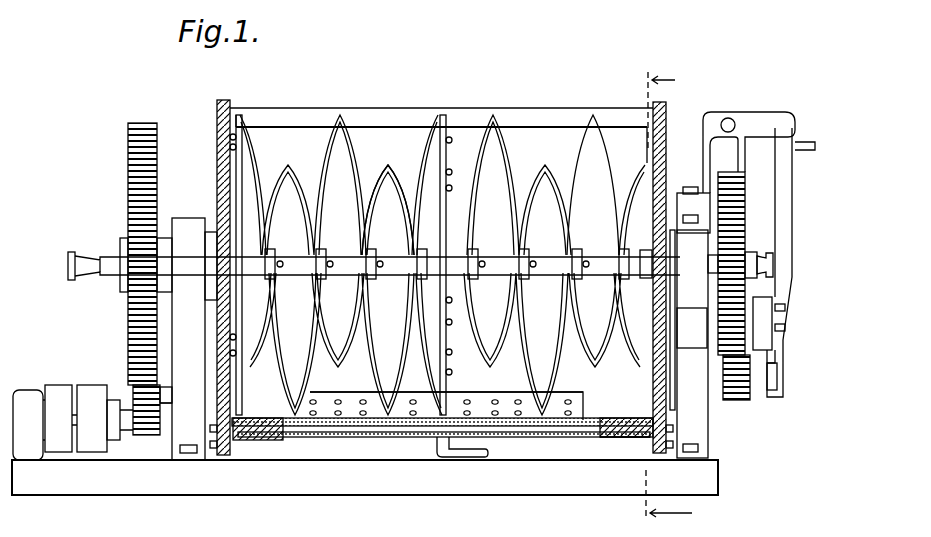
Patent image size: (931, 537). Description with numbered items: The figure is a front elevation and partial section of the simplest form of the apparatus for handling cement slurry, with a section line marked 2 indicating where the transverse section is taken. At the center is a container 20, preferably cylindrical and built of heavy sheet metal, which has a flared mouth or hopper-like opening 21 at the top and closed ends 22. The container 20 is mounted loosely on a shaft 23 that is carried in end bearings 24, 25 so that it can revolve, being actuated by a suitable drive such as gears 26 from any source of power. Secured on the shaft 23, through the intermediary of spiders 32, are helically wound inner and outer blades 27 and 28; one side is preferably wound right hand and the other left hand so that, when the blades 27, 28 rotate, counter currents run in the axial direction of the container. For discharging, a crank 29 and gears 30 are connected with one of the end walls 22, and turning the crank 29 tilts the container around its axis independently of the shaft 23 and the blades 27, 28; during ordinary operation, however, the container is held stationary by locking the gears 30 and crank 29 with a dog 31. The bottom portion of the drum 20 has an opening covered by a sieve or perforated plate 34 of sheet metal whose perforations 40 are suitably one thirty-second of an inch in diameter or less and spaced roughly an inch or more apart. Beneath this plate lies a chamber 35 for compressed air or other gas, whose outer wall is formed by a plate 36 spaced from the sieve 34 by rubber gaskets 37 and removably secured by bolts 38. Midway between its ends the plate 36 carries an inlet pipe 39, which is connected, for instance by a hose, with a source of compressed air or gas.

The section line 2- 2 is at (666, 295).
The container 20 is at (548, 130).
The flared mouth 21 is at (402, 112).
The closed ends 22 is at (666, 110).
The shaft 23 is at (345, 254).
The end bearing 24 is at (186, 220).
The end bearing 25 is at (692, 420).
The gears 26 is at (128, 160).
The inner blade 27 is at (394, 157).
The outer blade 28 is at (581, 167).
The crank 29 is at (785, 222).
The gears 30 is at (737, 212).
The dog 31 is at (757, 122).
The spiders 32 is at (447, 232).
The perforated plate 34 is at (483, 400).
The chamber 35 is at (313, 430).
The plate 36 is at (372, 438).
The rubber gaskets 37 is at (602, 438).
The bolts 38 is at (625, 450).
The inlet pipe 39 is at (470, 458).
The perforations 40 is at (572, 414).